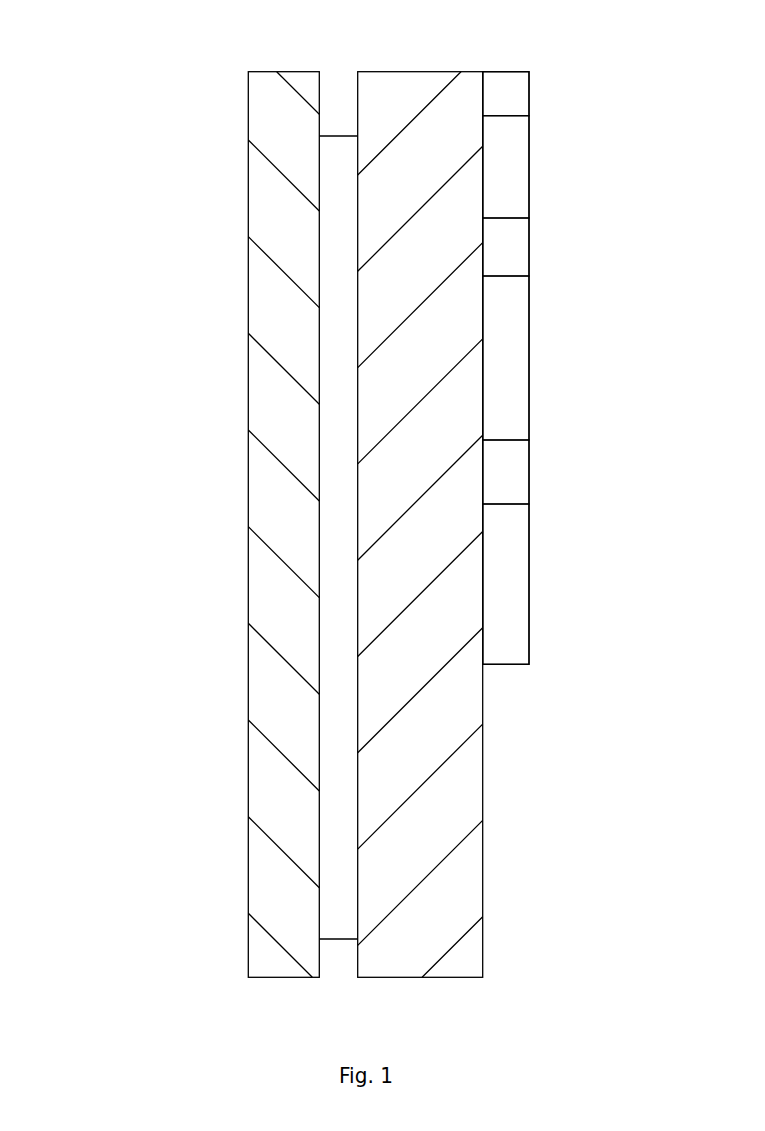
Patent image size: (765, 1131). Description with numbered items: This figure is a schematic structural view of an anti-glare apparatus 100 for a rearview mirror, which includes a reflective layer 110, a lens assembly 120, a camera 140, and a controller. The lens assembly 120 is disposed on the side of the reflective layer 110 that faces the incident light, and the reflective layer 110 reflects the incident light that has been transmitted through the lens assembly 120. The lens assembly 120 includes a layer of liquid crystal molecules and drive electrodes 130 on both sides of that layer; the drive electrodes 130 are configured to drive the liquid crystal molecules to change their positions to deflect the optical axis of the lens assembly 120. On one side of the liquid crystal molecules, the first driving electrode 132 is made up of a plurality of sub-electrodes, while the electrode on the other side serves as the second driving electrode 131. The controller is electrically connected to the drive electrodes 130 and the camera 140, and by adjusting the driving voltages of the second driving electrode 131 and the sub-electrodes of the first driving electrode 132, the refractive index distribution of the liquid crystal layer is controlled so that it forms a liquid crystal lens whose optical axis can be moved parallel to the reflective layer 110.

The anti-glare apparatus 100 is at (222, 663).
The reflective layer 110 is at (295, 527).
The lens assembly 120 is at (425, 633).
The drive electrodes 130 is at (487, 469).
The second driving electrode 131 is at (337, 722).
The first driving electrode 132 is at (512, 150).
The camera 140 is at (505, 92).